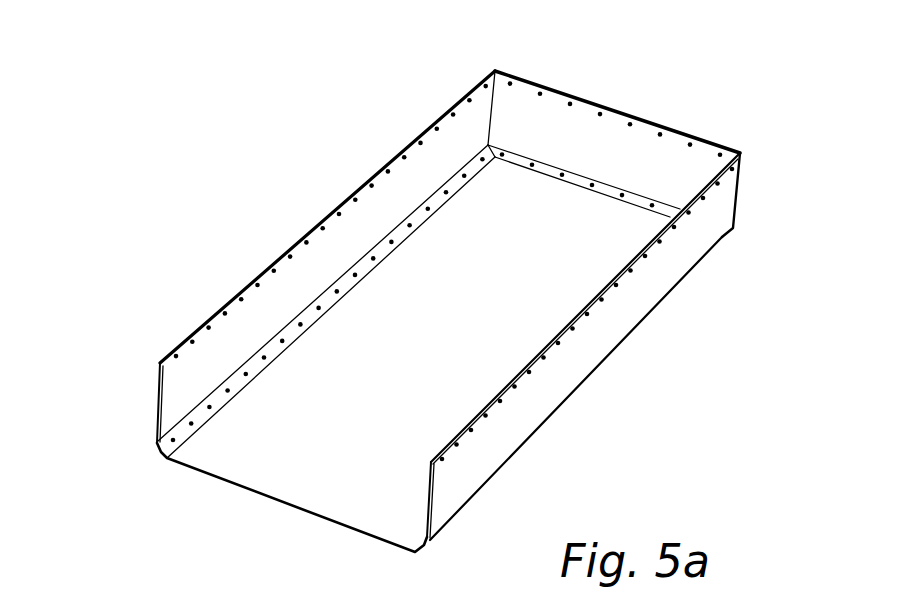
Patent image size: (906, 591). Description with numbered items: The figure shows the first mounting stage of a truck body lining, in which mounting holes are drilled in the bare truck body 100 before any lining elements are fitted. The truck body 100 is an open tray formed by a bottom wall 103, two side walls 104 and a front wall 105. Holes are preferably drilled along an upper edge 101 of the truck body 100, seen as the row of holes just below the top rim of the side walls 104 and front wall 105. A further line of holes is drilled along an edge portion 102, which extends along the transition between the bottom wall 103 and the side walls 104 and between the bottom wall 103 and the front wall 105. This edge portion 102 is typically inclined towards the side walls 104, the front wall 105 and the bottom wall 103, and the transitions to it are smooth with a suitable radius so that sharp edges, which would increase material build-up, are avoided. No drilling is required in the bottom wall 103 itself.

The truck body 100 is at (673, 92).
The upper edge 101 is at (377, 173).
The edge portion 102 is at (542, 163).
The bottom wall 103 is at (268, 482).
The side wall 104 is at (157, 392).
The front wall 105 is at (662, 177).